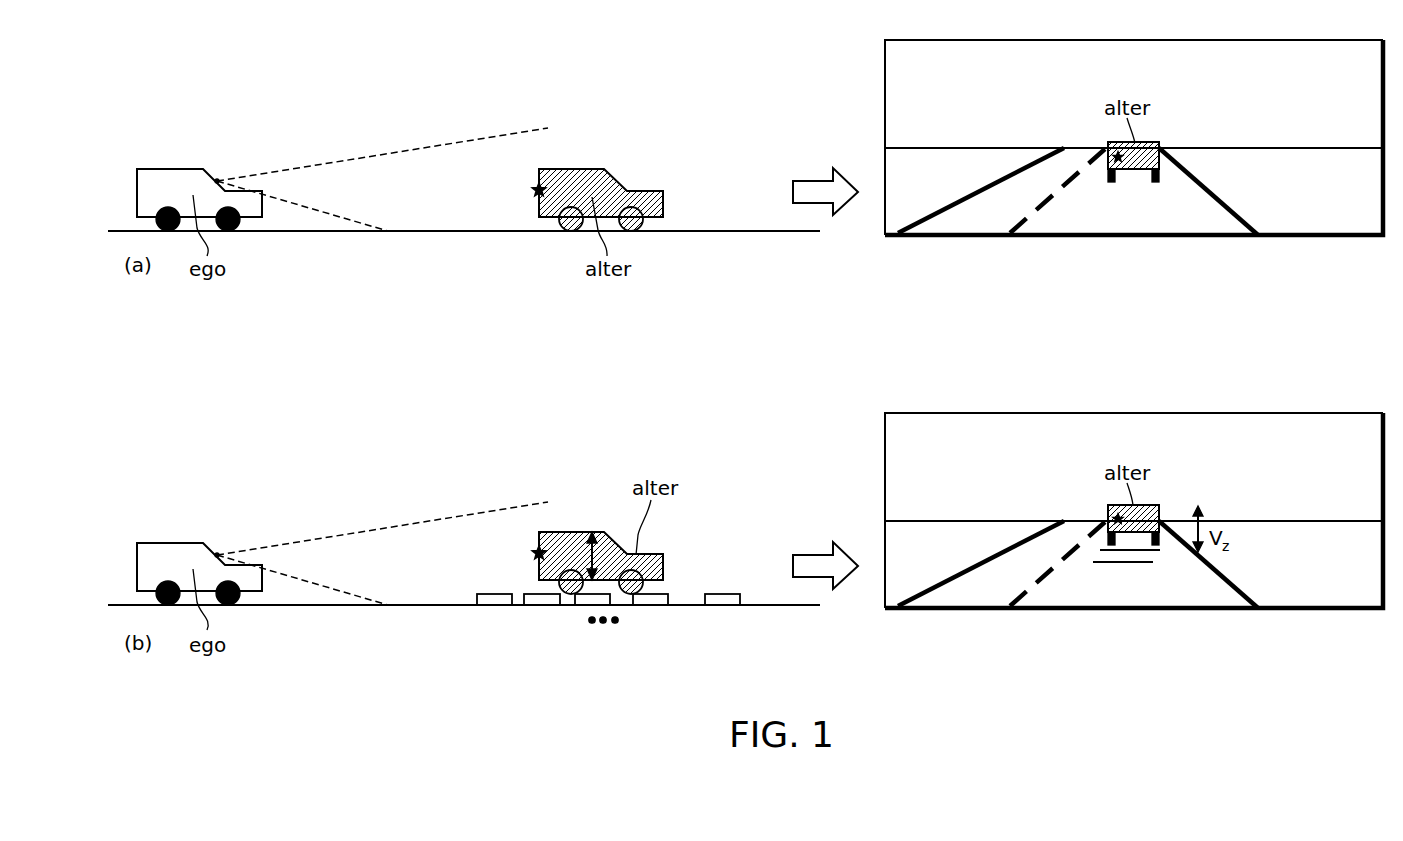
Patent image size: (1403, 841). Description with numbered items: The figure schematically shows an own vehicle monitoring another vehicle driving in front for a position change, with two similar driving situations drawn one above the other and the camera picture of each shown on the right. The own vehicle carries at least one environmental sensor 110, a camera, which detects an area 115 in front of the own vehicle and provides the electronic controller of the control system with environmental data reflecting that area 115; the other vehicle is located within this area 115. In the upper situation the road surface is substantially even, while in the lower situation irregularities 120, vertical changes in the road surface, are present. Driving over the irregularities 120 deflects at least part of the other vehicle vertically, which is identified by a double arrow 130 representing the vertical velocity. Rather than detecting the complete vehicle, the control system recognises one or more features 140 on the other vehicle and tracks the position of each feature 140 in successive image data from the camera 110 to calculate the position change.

The environmental sensor 110 is at (211, 171).
The area 115 is at (403, 172).
The irregularities 120 is at (495, 600).
The double arrow 130 is at (590, 531).
The feature 140 is at (535, 190).